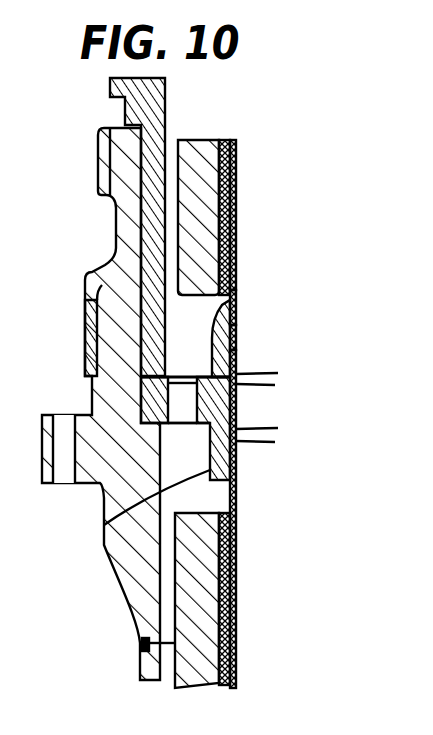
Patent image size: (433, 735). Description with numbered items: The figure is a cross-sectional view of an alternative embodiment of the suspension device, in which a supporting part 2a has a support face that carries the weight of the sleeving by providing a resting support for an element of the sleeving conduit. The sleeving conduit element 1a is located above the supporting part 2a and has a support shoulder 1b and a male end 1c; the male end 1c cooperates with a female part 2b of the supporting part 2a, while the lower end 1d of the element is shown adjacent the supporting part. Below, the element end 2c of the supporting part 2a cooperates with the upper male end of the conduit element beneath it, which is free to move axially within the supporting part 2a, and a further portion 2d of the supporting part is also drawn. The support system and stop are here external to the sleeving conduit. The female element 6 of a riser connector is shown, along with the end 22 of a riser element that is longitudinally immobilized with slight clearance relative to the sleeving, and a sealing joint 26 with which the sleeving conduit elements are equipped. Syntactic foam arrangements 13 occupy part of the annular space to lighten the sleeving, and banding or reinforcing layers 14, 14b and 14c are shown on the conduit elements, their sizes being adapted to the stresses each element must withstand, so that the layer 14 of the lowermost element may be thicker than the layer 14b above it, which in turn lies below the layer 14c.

The sleeving conduit element 1a is at (236, 200).
The support shoulder 1b is at (228, 305).
The male end 1c is at (228, 333).
The lower end 1d is at (233, 358).
The supporting part 2a is at (234, 403).
The female part 2b is at (212, 348).
The element end 2c is at (263, 377).
The sleeve groove 2d is at (270, 436).
The female element 6 is at (140, 622).
The syntactic foam arrangements 13 is at (207, 155).
The banding or reinforcing layer 14 is at (230, 620).
The banding or reinforcing layer 14b is at (225, 653).
The banding or reinforcing layer 14c is at (229, 147).
The end of riser element 22 is at (140, 353).
The sealing joint 26 is at (104, 514).